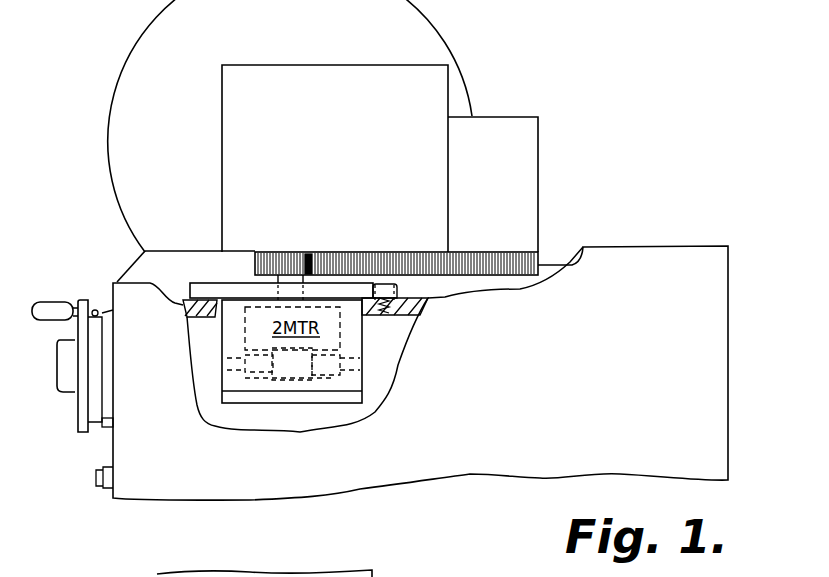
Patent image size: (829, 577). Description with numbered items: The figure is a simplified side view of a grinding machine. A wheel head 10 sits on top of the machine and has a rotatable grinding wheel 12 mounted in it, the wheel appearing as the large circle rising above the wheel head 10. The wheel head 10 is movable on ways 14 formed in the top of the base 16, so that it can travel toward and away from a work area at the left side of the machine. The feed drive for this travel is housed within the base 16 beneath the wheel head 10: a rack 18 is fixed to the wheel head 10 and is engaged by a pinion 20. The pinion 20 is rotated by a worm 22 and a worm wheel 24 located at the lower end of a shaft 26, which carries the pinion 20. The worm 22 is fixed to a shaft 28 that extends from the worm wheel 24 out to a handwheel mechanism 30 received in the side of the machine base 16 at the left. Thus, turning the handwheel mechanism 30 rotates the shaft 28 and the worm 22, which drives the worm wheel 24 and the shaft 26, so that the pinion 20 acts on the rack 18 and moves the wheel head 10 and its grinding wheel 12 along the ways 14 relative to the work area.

The wheel head 10 is at (323, 134).
The grinding wheel 12 is at (170, 134).
The ways 14 is at (505, 251).
The base 16 is at (534, 367).
The rack 18 is at (510, 278).
The pinion 20 is at (273, 257).
The worm 22 is at (288, 382).
The worm wheel 24 is at (333, 380).
The shaft 26 is at (311, 274).
The shaft 28 is at (237, 373).
The handwheel mechanism 30 is at (95, 293).